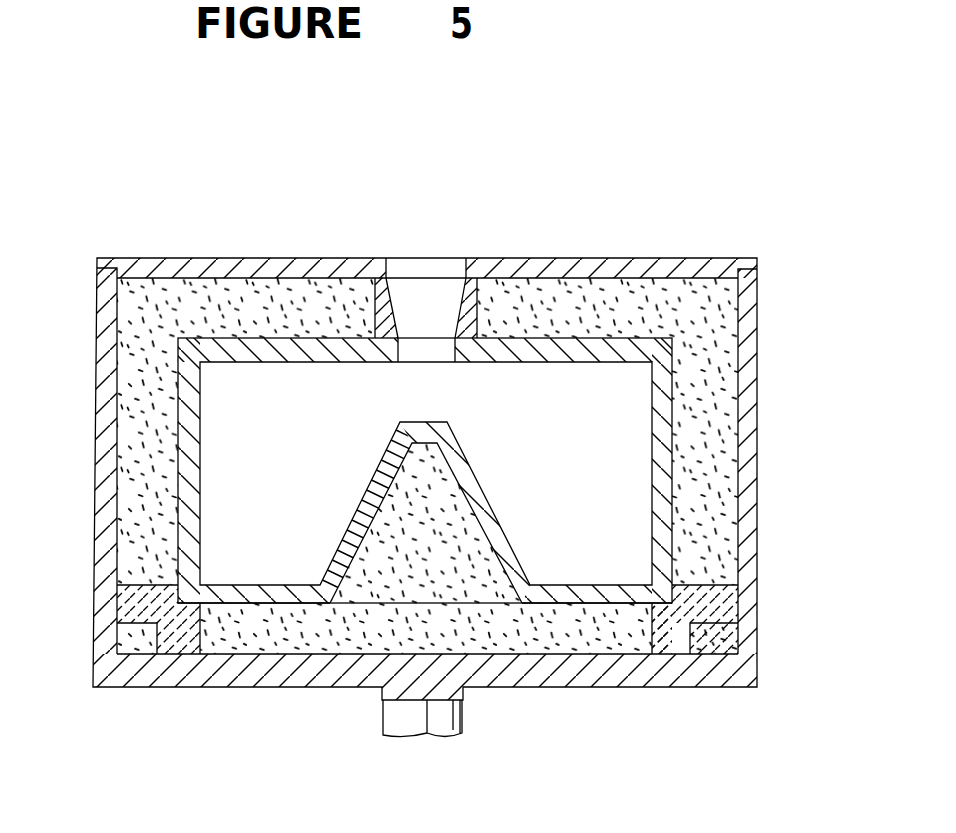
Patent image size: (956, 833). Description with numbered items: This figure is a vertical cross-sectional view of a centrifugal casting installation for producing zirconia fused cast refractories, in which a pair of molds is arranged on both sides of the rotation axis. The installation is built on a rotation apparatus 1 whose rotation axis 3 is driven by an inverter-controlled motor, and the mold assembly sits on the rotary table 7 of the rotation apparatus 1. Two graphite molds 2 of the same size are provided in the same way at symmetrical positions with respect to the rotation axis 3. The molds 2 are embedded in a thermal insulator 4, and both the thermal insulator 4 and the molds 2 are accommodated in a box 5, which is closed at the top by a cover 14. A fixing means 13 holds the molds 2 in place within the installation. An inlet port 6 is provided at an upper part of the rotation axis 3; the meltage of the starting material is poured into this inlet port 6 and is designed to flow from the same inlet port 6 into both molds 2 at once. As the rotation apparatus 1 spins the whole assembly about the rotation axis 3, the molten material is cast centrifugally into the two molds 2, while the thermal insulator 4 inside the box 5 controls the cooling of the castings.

The rotation apparatus 1 is at (270, 691).
The graphite mold 2 is at (620, 353).
The rotation axis 3 is at (462, 718).
The thermal insulator 4 is at (127, 465).
The box 5 is at (757, 437).
The inlet port 6 is at (425, 317).
The rotary table 7 is at (622, 675).
The fixing means 13 is at (123, 605).
The cover 14 is at (708, 277).